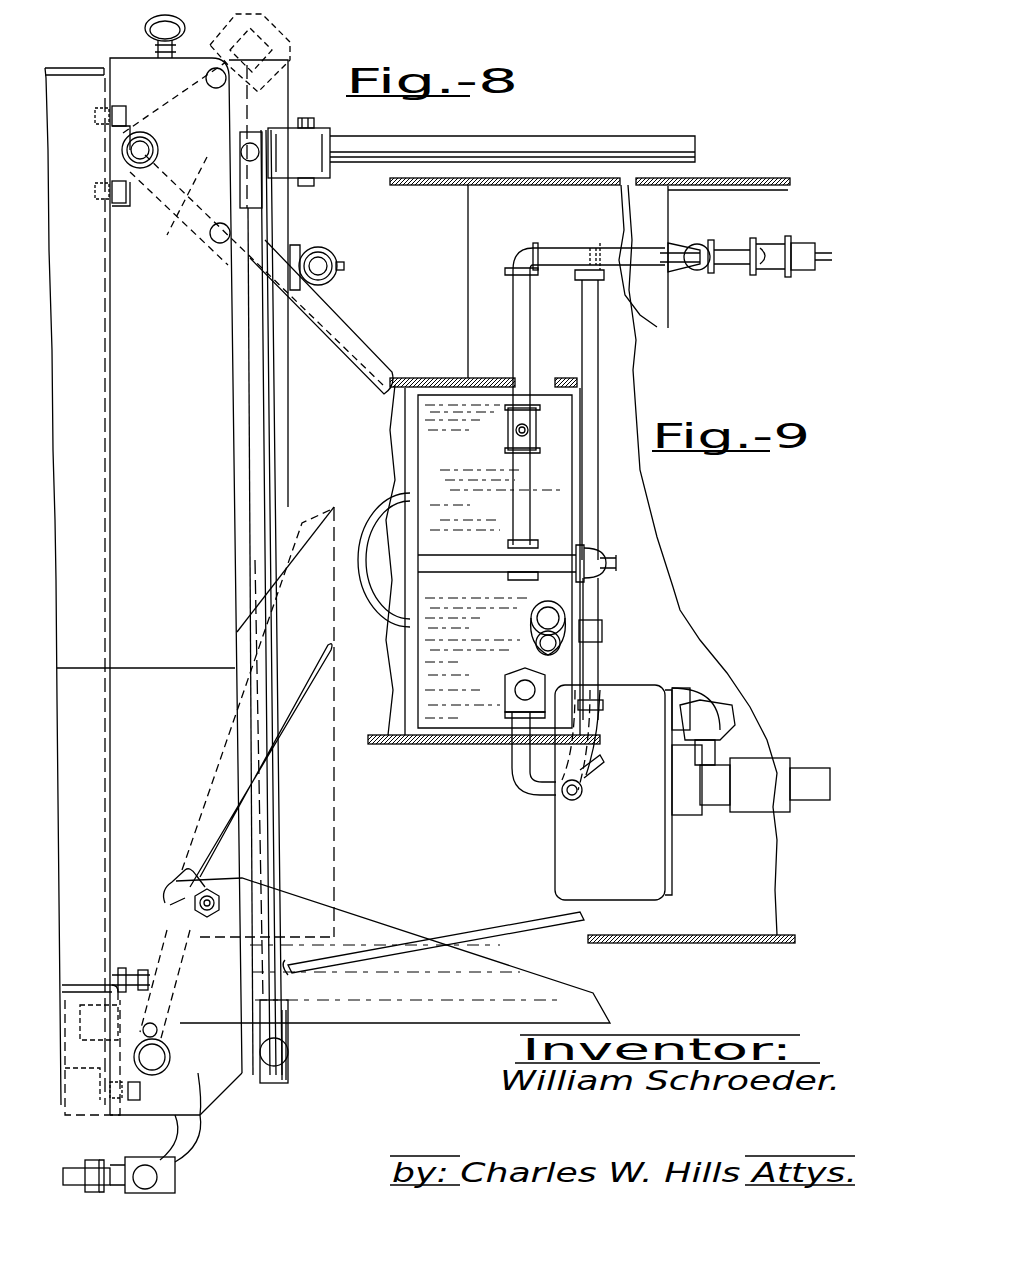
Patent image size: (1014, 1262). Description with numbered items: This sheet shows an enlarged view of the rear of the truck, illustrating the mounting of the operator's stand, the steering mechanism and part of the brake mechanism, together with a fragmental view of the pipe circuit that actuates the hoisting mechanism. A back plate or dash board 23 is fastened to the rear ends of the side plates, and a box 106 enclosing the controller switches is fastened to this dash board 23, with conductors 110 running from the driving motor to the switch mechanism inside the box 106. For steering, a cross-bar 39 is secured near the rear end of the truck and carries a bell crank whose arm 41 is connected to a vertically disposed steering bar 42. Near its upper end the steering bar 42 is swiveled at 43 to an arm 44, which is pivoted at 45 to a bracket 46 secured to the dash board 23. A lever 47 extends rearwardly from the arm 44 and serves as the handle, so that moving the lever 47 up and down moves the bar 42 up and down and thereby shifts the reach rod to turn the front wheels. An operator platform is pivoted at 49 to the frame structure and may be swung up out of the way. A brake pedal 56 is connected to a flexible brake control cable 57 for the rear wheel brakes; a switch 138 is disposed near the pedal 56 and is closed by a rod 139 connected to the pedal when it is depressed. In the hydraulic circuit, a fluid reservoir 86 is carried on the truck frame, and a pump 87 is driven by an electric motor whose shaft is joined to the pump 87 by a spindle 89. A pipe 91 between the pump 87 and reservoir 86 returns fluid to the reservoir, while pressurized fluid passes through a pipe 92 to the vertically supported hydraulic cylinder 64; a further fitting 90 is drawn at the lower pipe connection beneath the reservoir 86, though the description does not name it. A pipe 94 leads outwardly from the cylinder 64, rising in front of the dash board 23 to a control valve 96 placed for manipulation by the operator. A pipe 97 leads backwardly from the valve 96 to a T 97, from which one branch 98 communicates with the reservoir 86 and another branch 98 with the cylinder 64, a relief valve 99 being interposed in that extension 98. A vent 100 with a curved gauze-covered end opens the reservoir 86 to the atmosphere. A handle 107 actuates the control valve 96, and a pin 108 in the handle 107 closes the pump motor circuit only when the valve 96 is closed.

In FIG. 8, the back plate or dash board 23 is at (118, 588).
In FIG. 8, the cross-bar 39 is at (132, 1058).
In FIG. 8, the bell crank arm 41 is at (254, 1062).
In FIG. 8, the steering bar 42 is at (266, 836).
In FIG. 8, the swivel 43 is at (270, 118).
In FIG. 8, the arm 44 is at (188, 252).
In FIG. 8, the pivot 45 is at (139, 148).
In FIG. 8, the bracket 46 is at (115, 210).
In FIG. 8, the lever 47 is at (535, 128).
In FIG. 8, the pivot 49 is at (206, 886).
In FIG. 8, the brake pedal 56 is at (515, 938).
In FIG. 8, the flexible brake control cable 57 is at (112, 978).
In FIG. 9, the hydraulic cylinder 64 is at (368, 502).
In FIG. 9, the fluid reservoir 86 is at (484, 561).
In FIG. 9, the pump 87 is at (640, 886).
In FIG. 9, the spindle 89 is at (814, 800).
In FIG. 9, the suction pipe 90 is at (528, 748).
In FIG. 9, the pipe 91 is at (688, 690).
In FIG. 9, the pipe 92 is at (607, 678).
In FIG. 9, the pipe 94 is at (488, 555).
In FIG. 9, the control valve 96 is at (800, 244).
In FIG. 9, the pipe and T 97 is at (513, 318).
In FIG. 8, the branch 98 is at (475, 1020).
In FIG. 9, the branch 98 is at (523, 482).
In FIG. 9, the relief valve 99 is at (530, 552).
In FIG. 9, the vent 100 is at (537, 623).
In FIG. 8, the box 106 is at (192, 420).
In FIG. 8, the handle 107 is at (320, 248).
In FIG. 8, the pin 108 is at (345, 268).
In FIG. 8, the conductors 110 is at (175, 1012).
In FIG. 8, the switch 138 is at (128, 972).
In FIG. 8, the rod 139 is at (112, 1090).